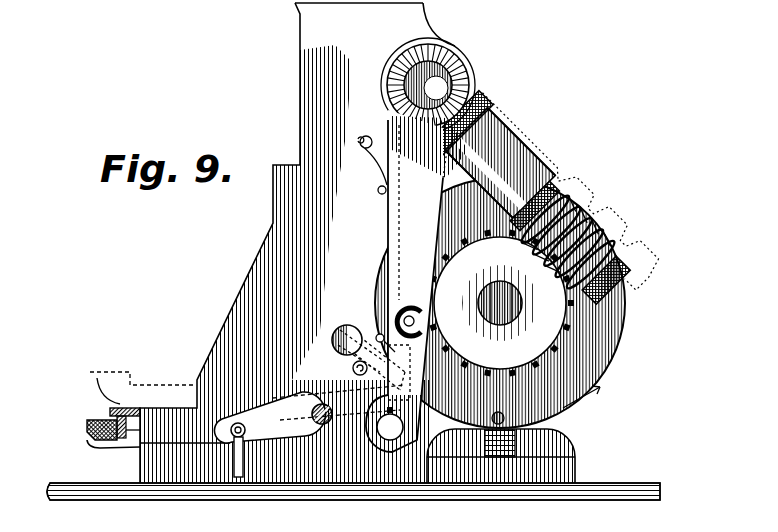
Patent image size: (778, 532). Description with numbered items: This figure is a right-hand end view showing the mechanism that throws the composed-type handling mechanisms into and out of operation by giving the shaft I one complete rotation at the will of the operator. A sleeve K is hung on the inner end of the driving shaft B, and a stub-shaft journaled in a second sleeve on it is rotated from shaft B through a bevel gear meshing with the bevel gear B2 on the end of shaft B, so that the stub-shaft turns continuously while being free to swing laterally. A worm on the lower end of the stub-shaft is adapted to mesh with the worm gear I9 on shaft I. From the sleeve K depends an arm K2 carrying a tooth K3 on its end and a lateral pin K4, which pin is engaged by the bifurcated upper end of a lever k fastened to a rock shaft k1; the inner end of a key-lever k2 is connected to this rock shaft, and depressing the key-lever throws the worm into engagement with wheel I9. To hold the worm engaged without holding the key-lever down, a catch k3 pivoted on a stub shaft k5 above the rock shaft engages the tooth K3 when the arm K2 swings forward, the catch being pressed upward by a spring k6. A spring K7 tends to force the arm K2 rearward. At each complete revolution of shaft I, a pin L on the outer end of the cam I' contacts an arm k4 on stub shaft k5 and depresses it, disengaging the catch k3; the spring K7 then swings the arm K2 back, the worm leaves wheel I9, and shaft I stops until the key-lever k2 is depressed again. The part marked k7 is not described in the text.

The sleeve K is at (417, 239).
The arm K2 is at (400, 190).
The tooth K3 is at (379, 331).
The lateral pin K4 is at (412, 307).
The spring K7 is at (388, 235).
The shaft B is at (432, 89).
The bevel gear B2 is at (454, 72).
The shaft I is at (507, 303).
The cam I' is at (507, 330).
The worm gear I9 is at (500, 303).
The pin L is at (504, 417).
The lever k is at (380, 366).
The rock shaft k1 is at (390, 423).
The key-lever k2 is at (107, 446).
The catch k3 is at (349, 363).
The arm k4 is at (377, 337).
The stub shaft k5 is at (246, 467).
The spring k6 is at (372, 374).
The rocker k7 is at (129, 390).